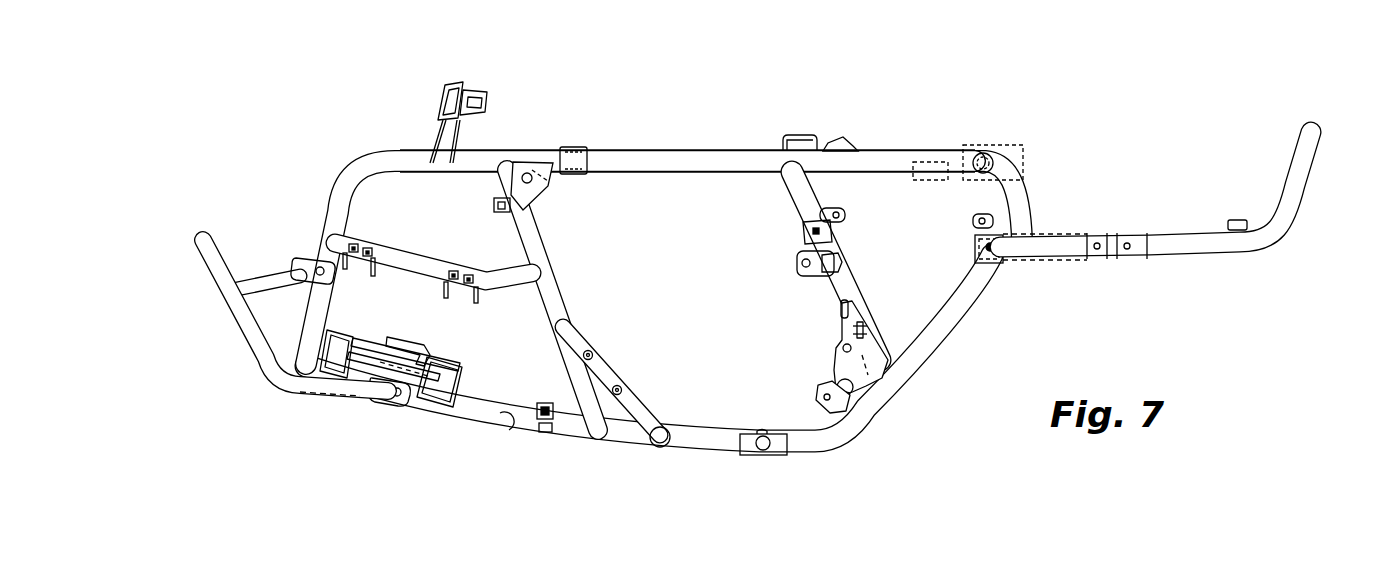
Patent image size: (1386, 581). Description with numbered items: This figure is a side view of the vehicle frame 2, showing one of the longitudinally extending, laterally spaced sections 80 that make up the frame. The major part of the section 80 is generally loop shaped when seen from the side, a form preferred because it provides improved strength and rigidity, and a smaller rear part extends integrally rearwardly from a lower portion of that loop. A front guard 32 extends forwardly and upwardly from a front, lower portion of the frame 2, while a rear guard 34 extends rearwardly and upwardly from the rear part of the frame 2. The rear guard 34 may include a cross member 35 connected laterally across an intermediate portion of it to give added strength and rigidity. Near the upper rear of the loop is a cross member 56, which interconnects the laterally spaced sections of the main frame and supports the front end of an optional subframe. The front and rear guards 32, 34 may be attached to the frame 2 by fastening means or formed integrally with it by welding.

The frame 2 is at (563, 112).
The section 80 is at (673, 151).
The cross member 56 is at (968, 165).
The cross member 35 is at (1232, 217).
The rear guard 34 is at (1213, 255).
The front guard 32 is at (222, 287).